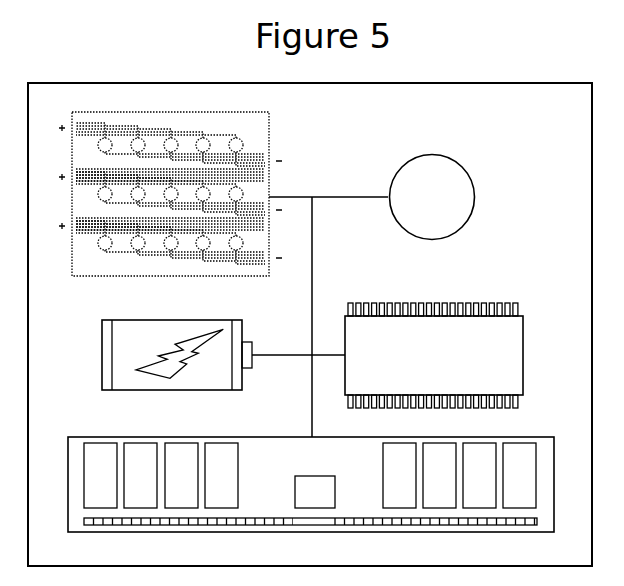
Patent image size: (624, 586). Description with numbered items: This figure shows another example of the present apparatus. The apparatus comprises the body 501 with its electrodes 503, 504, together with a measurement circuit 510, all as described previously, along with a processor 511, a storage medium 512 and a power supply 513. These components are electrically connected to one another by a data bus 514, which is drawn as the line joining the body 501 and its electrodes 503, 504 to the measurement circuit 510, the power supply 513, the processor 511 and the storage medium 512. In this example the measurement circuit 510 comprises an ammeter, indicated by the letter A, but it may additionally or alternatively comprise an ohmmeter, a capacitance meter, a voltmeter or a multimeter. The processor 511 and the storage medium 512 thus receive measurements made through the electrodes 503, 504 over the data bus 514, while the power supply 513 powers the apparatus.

The body 501 is at (254, 127).
The electrode 503 is at (58, 250).
The electrode 504 is at (296, 156).
The measurement circuit 510 is at (458, 197).
The processor 511 is at (434, 355).
The storage medium 512 is at (311, 484).
The power supply 513 is at (177, 355).
The data bus 514 is at (312, 318).